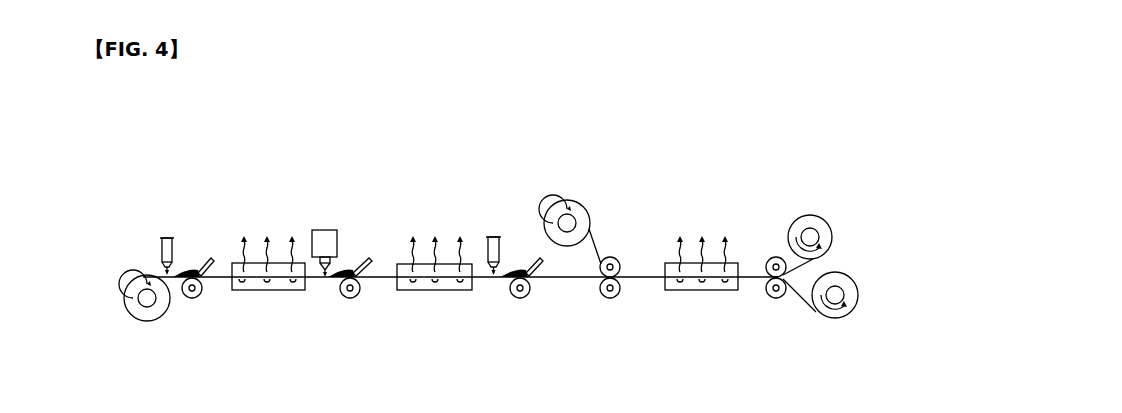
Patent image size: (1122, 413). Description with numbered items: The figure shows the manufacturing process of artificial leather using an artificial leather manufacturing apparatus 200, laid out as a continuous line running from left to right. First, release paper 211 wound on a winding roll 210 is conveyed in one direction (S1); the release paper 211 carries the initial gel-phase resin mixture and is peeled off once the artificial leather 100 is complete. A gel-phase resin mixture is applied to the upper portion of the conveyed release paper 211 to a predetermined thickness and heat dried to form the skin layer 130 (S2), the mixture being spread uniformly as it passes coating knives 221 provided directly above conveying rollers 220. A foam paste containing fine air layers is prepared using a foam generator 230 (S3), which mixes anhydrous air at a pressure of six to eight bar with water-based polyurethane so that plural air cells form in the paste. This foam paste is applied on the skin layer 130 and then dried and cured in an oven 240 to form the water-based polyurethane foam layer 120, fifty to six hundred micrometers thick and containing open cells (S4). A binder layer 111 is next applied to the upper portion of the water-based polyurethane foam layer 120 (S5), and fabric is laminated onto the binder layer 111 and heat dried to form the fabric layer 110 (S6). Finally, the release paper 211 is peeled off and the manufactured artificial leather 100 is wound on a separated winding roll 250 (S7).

The artificial leather manufacturing apparatus 200 is at (388, 164).
The winding roll 210 is at (153, 322).
The release paper 211 is at (163, 266).
The conveying rollers 220 is at (194, 298).
The coating knives 221 is at (198, 267).
The foam generator 230 is at (332, 230).
The skin layer 130 is at (315, 264).
The oven 240 is at (412, 292).
The water-based polyurethane foam layer 120 is at (487, 273).
The fabric layer 110 is at (638, 275).
The binder layer 111 is at (573, 279).
The separated winding roll 250 is at (810, 214).
The artificial leather 100 is at (823, 263).
The release paper conveying step S1 is at (134, 261).
The skin layer forming step S2 is at (234, 253).
The foam paste preparing step S3 is at (350, 227).
The foam layer forming step S4 is at (455, 306).
The binder layer applying step S5 is at (498, 316).
The fabric layer forming step S6 is at (687, 303).
The peeling and winding step S7 is at (777, 311).